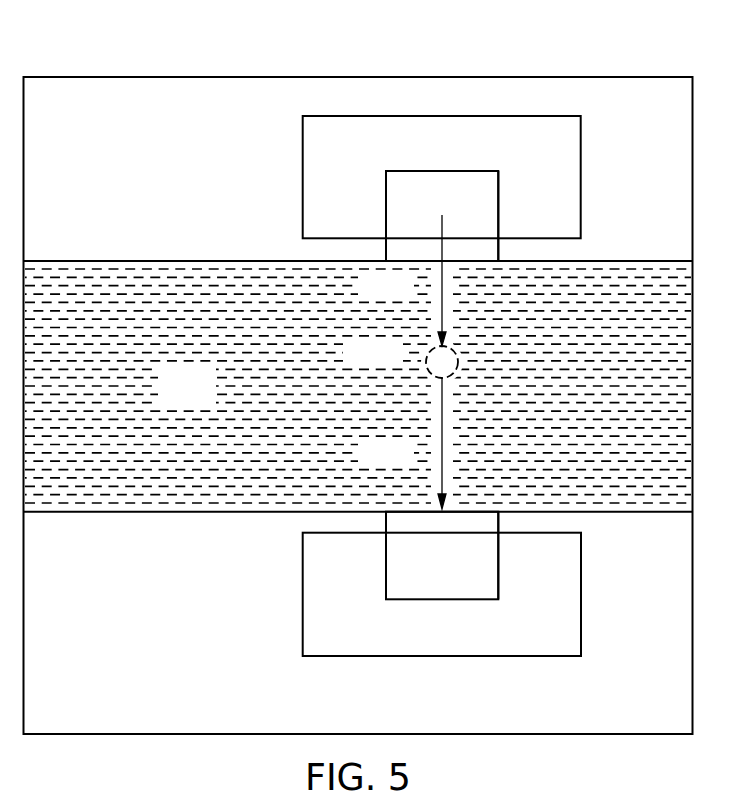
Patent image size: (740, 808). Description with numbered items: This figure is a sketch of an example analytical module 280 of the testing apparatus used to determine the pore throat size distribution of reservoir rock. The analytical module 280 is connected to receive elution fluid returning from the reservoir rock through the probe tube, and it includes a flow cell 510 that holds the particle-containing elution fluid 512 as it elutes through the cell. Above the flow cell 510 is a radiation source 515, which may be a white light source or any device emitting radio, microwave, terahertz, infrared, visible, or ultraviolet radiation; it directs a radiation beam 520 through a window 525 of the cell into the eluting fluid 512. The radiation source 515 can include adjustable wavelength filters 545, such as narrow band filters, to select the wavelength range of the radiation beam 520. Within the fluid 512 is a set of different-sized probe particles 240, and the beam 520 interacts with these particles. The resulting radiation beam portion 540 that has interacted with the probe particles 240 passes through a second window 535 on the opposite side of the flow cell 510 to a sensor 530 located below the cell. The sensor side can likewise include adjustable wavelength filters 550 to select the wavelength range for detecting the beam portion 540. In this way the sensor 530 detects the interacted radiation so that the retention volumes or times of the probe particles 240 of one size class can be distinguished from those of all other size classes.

The analytical module 280 is at (357, 77).
The flow cell 510 is at (125, 260).
The elution fluid 512 is at (210, 402).
The radiation source 515 is at (310, 176).
The window 525 is at (430, 247).
The adjustable wavelength filters 545 is at (489, 204).
The radiation beam 520 is at (439, 295).
The set of different-sized probe particles 240 is at (427, 370).
The radiation beam portion 540 is at (439, 440).
The sensor 530 is at (310, 596).
The window 535 is at (430, 525).
The adjustable wavelength filters 550 is at (489, 568).